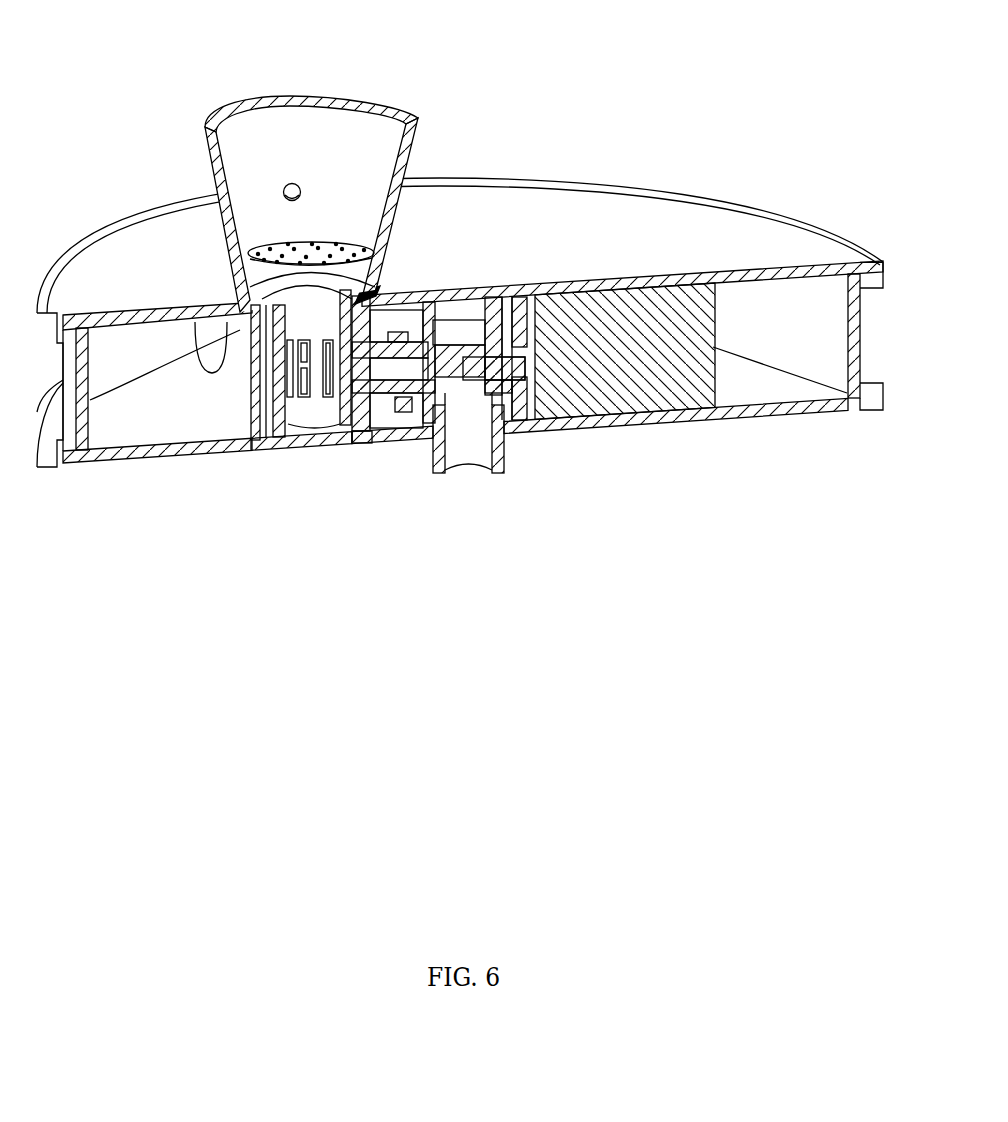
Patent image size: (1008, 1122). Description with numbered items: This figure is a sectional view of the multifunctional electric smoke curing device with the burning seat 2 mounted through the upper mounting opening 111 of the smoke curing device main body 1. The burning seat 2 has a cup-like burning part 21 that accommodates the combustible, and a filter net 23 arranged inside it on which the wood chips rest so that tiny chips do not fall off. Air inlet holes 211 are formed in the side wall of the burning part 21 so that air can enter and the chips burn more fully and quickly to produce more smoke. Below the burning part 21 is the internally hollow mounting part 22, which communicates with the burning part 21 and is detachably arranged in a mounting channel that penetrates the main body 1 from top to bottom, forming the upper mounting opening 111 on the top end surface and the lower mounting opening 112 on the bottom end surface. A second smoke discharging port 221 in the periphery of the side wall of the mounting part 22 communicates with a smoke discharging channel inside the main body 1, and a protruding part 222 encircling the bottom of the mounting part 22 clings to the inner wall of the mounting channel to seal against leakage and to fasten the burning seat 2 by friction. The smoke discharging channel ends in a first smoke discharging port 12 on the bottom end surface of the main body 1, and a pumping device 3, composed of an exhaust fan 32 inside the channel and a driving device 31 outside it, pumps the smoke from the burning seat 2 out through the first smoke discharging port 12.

The smoke curing device main body 1 is at (460, 312).
The first smoke discharging port 12 is at (523, 467).
The upper mounting opening 111 is at (363, 297).
The lower mounting opening 112 is at (360, 450).
The burning seat 2 is at (316, 165).
The burning part 21 is at (292, 138).
The air inlet hole 211 is at (285, 186).
The mounting part 22 is at (247, 418).
The second smoke discharging port 221 is at (308, 380).
The protruding part 222 is at (270, 445).
The filter net 23 is at (280, 245).
The pumping device 3 is at (574, 272).
The driving device 31 is at (557, 340).
The exhaust fan 32 is at (460, 337).